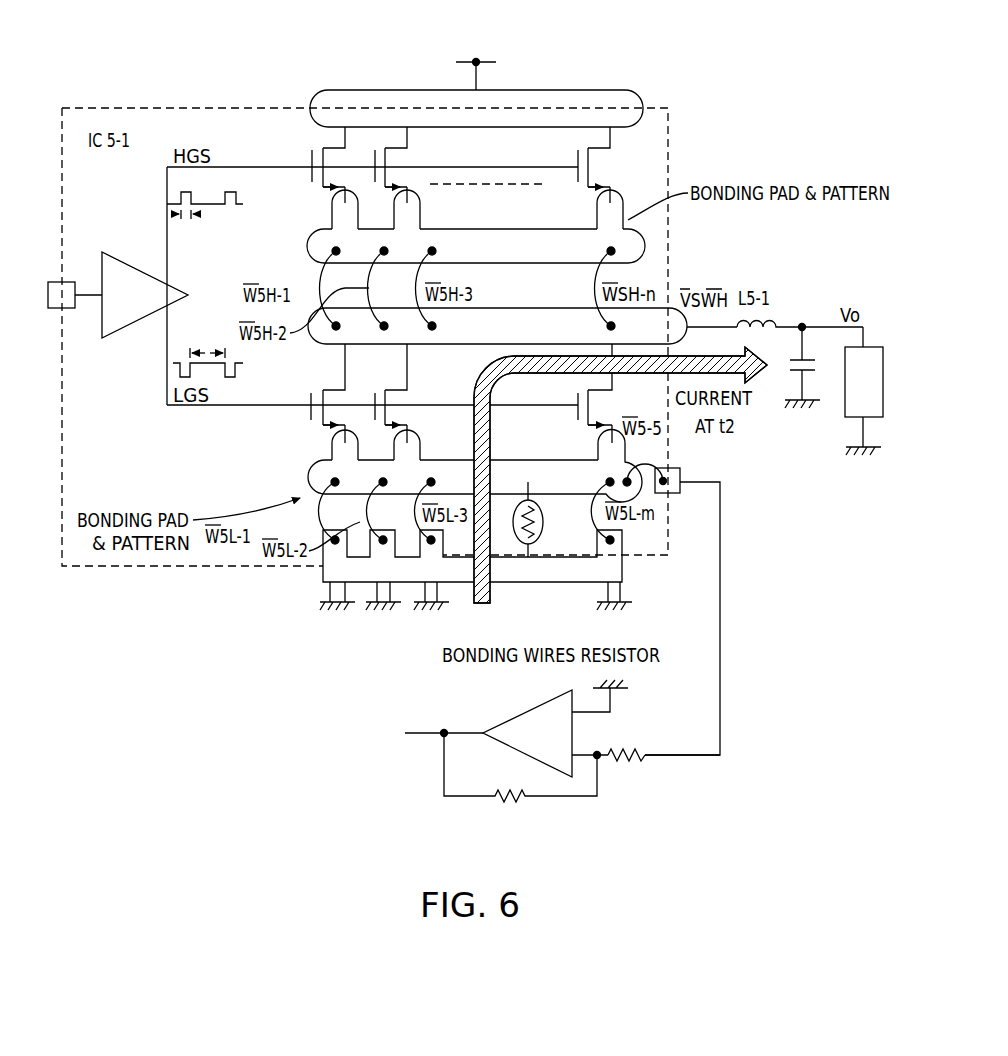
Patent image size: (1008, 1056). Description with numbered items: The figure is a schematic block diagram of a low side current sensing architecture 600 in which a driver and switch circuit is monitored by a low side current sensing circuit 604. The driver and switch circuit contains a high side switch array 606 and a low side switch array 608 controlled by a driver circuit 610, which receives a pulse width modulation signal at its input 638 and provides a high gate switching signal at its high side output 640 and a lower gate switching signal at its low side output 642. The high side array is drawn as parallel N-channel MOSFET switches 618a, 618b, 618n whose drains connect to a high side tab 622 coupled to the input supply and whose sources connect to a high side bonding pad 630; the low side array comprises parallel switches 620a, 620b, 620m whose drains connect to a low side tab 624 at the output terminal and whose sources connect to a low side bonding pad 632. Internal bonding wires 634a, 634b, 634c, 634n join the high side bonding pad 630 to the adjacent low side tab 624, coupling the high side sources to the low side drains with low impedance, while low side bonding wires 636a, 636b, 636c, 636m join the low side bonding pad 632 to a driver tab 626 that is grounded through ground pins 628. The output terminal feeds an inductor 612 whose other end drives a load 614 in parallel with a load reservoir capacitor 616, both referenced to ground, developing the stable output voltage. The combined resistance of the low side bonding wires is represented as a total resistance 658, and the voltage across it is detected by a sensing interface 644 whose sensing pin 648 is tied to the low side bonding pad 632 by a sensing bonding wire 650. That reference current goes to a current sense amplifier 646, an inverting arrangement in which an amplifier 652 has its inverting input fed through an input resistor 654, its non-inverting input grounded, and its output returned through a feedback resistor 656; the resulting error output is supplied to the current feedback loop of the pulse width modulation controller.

The low side current sensing architecture 600 is at (95, 106).
The low side current sensing circuit 604 is at (590, 716).
The high side switch array 606 is at (482, 159).
The low side switch array 608 is at (446, 402).
The driver circuit 610 is at (125, 265).
The inductor 612 is at (778, 319).
The load 614 is at (884, 359).
The load reservoir capacitor 616 is at (790, 372).
The high side switch 618a is at (340, 138).
The high side switch 618b is at (412, 149).
The high side switch 618n is at (586, 183).
The low side switch 620a is at (323, 392).
The low side switch 620b is at (387, 392).
The low side switch 620m is at (590, 402).
The high side tab 622 is at (567, 90).
The low side tab 624 is at (666, 309).
The driver tab 626 is at (322, 571).
The ground pins 628 is at (323, 598).
The high side bonding pad 630 is at (307, 247).
The low side bonding pad 632 is at (308, 470).
The internal bonding wire 634a is at (321, 290).
The internal bonding wire 634b is at (371, 262).
The internal bonding wire 634c is at (425, 262).
The internal bonding wire 634n is at (598, 298).
The low side bonding wire 636a is at (322, 512).
The low side bonding wire 636b is at (362, 511).
The low side bonding wire 636c is at (414, 515).
The low side bonding wire 636m is at (598, 460).
The input 638 is at (56, 309).
The high side output 640 is at (167, 205).
The low side output 642 is at (167, 363).
The sensing interface 644 is at (726, 498).
The current sense amplifier 646 is at (610, 812).
The sensing pin 648 is at (675, 495).
The sensing bonding wire 650 is at (657, 468).
The amplifier 652 is at (502, 723).
The input resistor 654 is at (630, 759).
The feedback resistor 656 is at (503, 802).
The total resistance of the low side bonding wires 658 is at (521, 548).